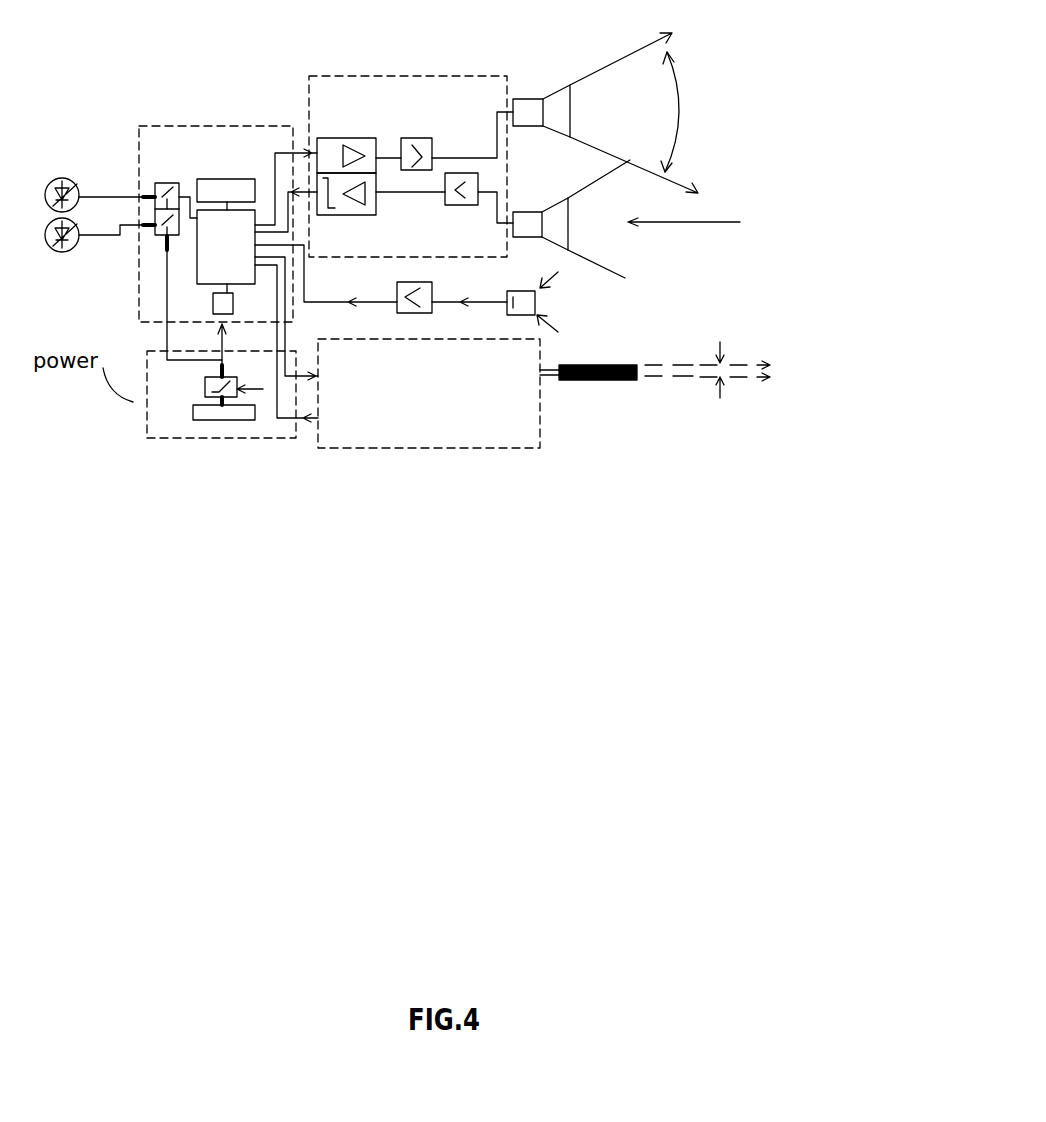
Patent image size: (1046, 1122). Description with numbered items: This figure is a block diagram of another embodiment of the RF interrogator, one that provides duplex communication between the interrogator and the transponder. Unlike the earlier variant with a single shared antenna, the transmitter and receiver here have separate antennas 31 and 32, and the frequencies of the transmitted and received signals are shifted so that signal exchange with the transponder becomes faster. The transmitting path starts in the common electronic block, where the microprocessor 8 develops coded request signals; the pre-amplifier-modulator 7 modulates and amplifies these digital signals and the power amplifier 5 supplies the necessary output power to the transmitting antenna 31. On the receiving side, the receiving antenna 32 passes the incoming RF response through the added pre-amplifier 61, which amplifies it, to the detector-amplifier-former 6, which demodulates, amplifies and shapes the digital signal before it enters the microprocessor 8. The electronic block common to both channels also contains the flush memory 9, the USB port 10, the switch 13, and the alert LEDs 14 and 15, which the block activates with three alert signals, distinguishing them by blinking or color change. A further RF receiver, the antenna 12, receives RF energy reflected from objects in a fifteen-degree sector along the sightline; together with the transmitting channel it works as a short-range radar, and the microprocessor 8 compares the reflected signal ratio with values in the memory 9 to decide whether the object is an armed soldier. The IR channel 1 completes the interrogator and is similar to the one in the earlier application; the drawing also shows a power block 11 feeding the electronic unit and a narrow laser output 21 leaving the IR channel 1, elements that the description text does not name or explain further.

The IR channel 1 is at (433, 460).
The power amplifier 5 is at (343, 128).
The detector-amplifier-former 6 is at (368, 223).
The pre-amplifier-modulator 7 is at (420, 130).
The microprocessor 8 is at (196, 290).
The flush memory 9 is at (233, 170).
The USB port 10 is at (240, 297).
The power switch 11 is at (200, 388).
The antenna 12 is at (512, 280).
The switch 13 is at (166, 180).
The alert LED 14 is at (61, 177).
The alert LED 15 is at (56, 257).
The laser beam 21 is at (602, 355).
The transmitting antenna 31 is at (560, 78).
The receiving antenna 32 is at (562, 193).
The pre-amplifier 61 is at (462, 212).